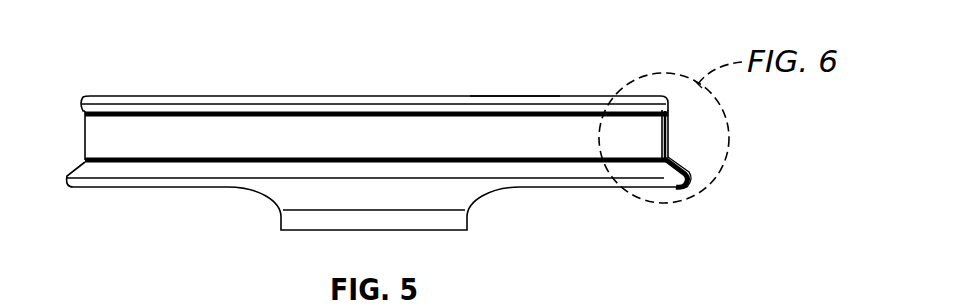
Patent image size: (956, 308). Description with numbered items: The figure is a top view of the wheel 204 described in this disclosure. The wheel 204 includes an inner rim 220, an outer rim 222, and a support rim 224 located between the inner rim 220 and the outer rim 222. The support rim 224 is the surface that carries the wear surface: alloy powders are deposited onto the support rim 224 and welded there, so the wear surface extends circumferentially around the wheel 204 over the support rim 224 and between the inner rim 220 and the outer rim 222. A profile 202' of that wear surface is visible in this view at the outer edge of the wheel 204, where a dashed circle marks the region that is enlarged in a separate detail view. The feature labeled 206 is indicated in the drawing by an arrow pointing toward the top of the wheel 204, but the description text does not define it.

The wheel 204 is at (444, 143).
The top surface of cap 206 is at (505, 96).
The outer rim 222 is at (391, 95).
The support rim 224 is at (432, 137).
The inner rim 220 is at (553, 180).
The profile of the wear surface 202' is at (743, 144).